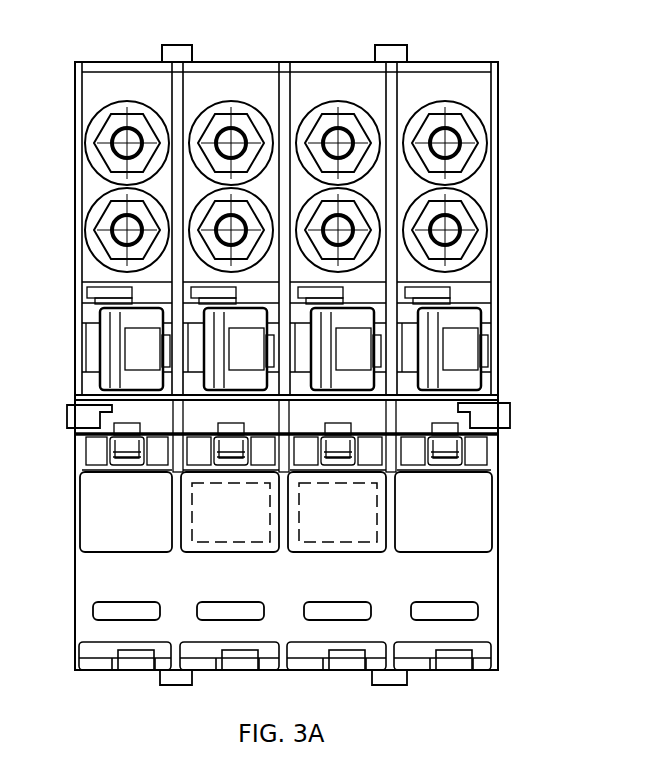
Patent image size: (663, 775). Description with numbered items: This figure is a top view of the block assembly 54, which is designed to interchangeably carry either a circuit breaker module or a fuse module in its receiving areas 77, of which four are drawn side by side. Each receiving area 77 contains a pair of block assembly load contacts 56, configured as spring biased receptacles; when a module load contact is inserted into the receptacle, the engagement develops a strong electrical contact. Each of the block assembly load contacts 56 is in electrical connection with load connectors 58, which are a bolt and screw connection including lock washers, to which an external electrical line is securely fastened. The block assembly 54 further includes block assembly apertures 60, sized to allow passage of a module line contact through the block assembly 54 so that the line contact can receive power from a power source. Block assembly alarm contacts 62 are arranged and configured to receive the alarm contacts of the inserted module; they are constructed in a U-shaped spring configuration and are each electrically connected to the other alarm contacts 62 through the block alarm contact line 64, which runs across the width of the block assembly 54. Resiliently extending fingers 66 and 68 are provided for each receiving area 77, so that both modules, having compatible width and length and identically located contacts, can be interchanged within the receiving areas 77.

The block assembly 54 is at (510, 52).
The block assembly load contacts 56 is at (474, 320).
The load connectors 58 is at (527, 213).
The block assembly apertures 60 is at (465, 610).
The block assembly alarm contacts 62 is at (460, 465).
The block alarm contact line 64 is at (95, 430).
The resilient fingers 66 is at (457, 290).
The resilient fingers 68 is at (460, 665).
The receiving areas 77 is at (426, 60).